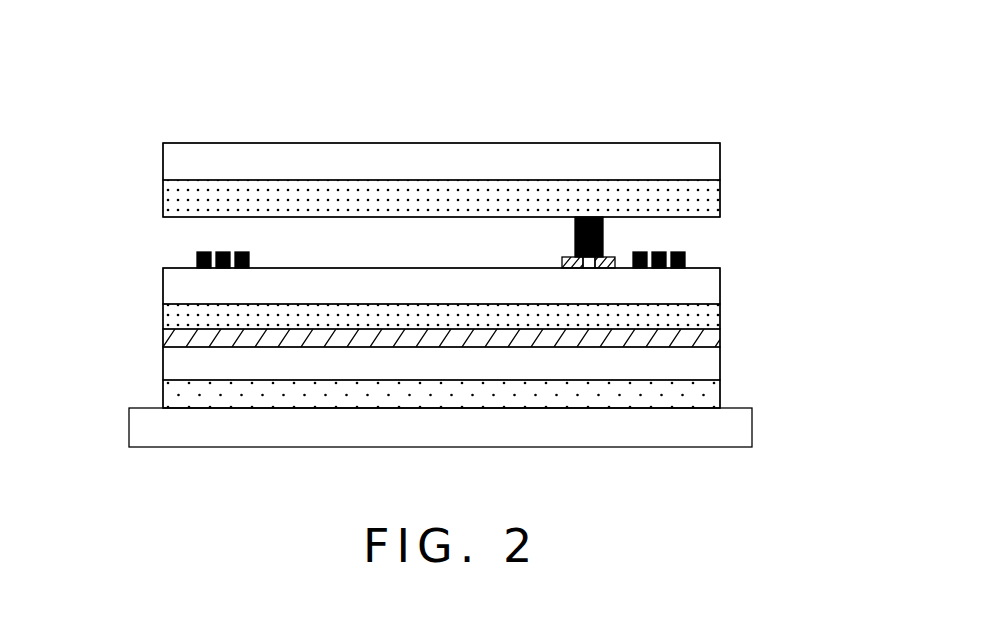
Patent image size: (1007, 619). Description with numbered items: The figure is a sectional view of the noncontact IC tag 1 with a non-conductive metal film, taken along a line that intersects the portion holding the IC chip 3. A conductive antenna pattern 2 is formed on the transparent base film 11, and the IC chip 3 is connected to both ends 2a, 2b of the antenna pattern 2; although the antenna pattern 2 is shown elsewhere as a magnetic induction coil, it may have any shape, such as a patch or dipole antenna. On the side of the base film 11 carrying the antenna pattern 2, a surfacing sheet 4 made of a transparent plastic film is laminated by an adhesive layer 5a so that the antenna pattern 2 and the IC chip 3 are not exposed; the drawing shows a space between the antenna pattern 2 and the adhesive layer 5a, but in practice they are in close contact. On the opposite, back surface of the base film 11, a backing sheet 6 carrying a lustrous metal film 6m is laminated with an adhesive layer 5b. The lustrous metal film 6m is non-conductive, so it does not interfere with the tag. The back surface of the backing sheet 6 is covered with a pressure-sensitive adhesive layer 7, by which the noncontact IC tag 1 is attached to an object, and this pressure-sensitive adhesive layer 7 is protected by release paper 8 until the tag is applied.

The noncontact IC tag 1 is at (373, 132).
The antenna pattern 2 is at (257, 256).
The end of antenna pattern 2a is at (564, 257).
The end of antenna pattern 2b is at (609, 257).
The IC chip 3 is at (589, 217).
The surfacing sheet 4 is at (710, 165).
The adhesive layer 5a is at (710, 198).
The adhesive layer 5b is at (712, 314).
The backing sheet 6 is at (710, 365).
The lustrous metal film 6m is at (712, 340).
The pressure-sensitive adhesive layer 7 is at (712, 392).
The release paper 8 is at (745, 430).
The base film 11 is at (710, 283).